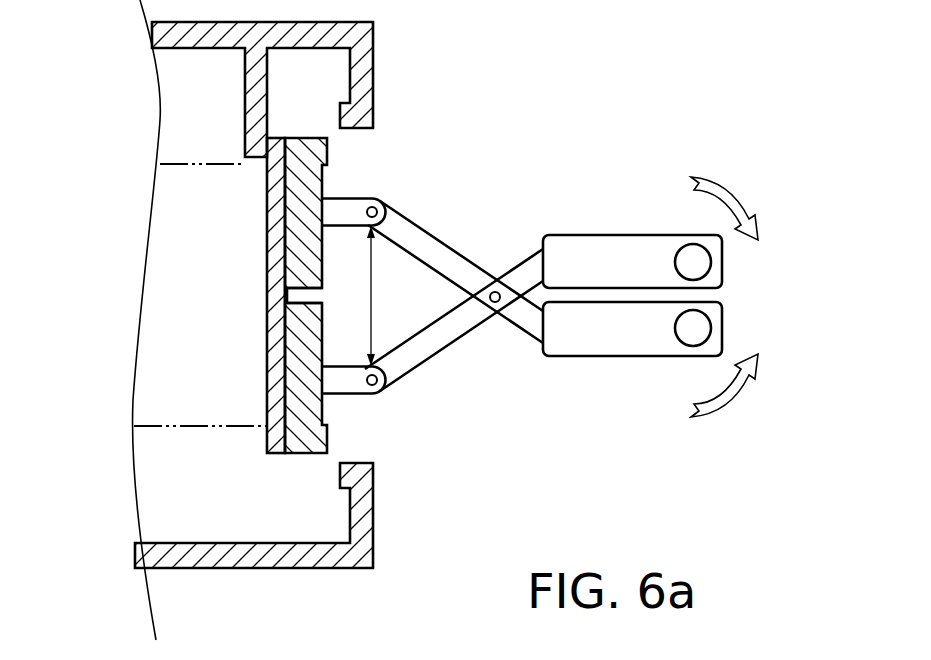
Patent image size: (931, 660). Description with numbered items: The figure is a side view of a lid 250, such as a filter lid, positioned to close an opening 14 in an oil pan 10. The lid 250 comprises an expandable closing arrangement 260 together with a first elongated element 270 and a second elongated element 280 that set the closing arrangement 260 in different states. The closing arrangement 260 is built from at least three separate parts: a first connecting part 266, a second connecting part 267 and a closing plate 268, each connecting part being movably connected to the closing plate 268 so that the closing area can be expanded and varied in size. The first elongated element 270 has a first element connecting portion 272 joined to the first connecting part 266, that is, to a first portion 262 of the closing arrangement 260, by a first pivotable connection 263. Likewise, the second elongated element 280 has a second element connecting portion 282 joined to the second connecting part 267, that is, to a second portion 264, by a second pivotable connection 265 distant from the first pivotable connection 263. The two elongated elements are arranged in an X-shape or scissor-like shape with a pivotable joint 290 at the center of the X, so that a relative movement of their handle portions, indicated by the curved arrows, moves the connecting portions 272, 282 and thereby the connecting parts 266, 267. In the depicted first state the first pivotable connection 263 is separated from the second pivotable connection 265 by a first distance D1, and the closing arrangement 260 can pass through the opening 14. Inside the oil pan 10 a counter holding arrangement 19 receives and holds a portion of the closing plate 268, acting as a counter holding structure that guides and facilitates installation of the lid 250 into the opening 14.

The oil pan 10 is at (376, 83).
The opening 14 is at (368, 445).
The counter holding arrangement 19 is at (228, 122).
The lid 250 is at (752, 168).
The expandable closing arrangement 260 is at (189, 295).
The first portion of the closing arrangement 262 is at (378, 425).
The first pivotable connection 263 is at (383, 393).
The second portion of the closing arrangement 264 is at (370, 178).
The second pivotable connection 265 is at (385, 203).
The first connecting part 266 is at (303, 347).
The second connecting part 267 is at (303, 182).
The closing plate 268 is at (277, 282).
The first elongated element 270 is at (639, 215).
The first element connecting portion 272 is at (428, 344).
The second elongated element 280 is at (643, 380).
The second element connecting portion 282 is at (428, 247).
The pivotable joint 290 is at (553, 297).
The first distance D1 is at (387, 296).